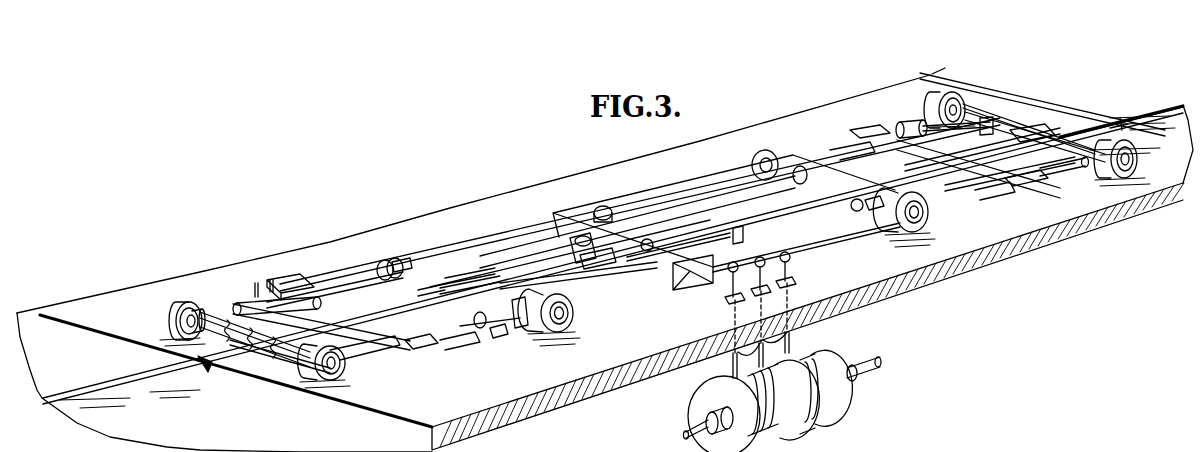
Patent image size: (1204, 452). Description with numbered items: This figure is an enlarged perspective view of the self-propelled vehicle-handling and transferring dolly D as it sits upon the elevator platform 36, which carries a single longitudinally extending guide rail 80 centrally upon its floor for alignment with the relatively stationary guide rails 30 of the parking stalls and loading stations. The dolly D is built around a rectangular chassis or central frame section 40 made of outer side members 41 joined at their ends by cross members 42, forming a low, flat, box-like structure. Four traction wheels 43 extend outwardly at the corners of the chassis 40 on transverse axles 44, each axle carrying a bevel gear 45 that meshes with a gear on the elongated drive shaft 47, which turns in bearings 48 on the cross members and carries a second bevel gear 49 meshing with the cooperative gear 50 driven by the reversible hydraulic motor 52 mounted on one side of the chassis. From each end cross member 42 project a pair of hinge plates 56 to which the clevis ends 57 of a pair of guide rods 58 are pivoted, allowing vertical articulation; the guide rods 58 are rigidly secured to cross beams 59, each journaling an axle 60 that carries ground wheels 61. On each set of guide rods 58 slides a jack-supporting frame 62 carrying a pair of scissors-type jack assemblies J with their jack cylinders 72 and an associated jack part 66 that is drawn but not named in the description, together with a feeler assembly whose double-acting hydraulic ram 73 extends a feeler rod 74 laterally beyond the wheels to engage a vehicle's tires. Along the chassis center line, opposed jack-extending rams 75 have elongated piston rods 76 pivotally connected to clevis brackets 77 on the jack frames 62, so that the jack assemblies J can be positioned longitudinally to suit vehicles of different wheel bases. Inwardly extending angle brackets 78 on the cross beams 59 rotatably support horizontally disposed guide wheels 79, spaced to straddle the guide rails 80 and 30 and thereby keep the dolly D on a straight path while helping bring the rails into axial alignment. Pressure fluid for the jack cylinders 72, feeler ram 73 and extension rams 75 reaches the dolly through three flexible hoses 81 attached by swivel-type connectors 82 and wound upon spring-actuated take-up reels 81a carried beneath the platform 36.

The guide rail 30 is at (106, 384).
The elevator platform 36 is at (626, 353).
The chassis or central frame section 40 is at (514, 227).
The outer side members 41 is at (733, 167).
The cross members 42 is at (384, 262).
The traction wheels 43 is at (549, 333).
The axles 44 is at (873, 210).
The bevel gear 45 is at (518, 328).
The drive shaft 47 is at (600, 245).
The bearings 48 is at (644, 240).
The second bevel gear 49 is at (677, 265).
The cooperative gear 50 is at (672, 244).
The hydraulic motor 52 is at (603, 212).
The hinge plates 56 is at (398, 262).
The clevis ends 57 is at (480, 326).
The guide rods 58 is at (363, 360).
The cross beams 59 is at (287, 358).
The axle 60 is at (257, 344).
The ground wheels 61 is at (185, 306).
The jack-supporting frame 62 is at (340, 300).
The plate 66 is at (284, 284).
The jack cylinders 72 is at (247, 307).
The hydraulic ram 73 is at (370, 303).
The feeler rod 74 is at (453, 345).
The jack-extending rams 75 is at (514, 228).
The piston rod 76 is at (448, 290).
The clevis bracket 77 is at (428, 292).
The angle brackets 78 is at (1050, 126).
The guide wheels 79 is at (1119, 122).
The guide rail 80 is at (205, 368).
The flexible conduits or hoses 81 is at (790, 348).
The take-up reels 81a is at (845, 357).
The swivel-type connectors 82 is at (757, 293).
The vehicle-handling and transferring carriage or dolly D is at (693, 173).
The scissors-type jack assemblies J is at (263, 268).